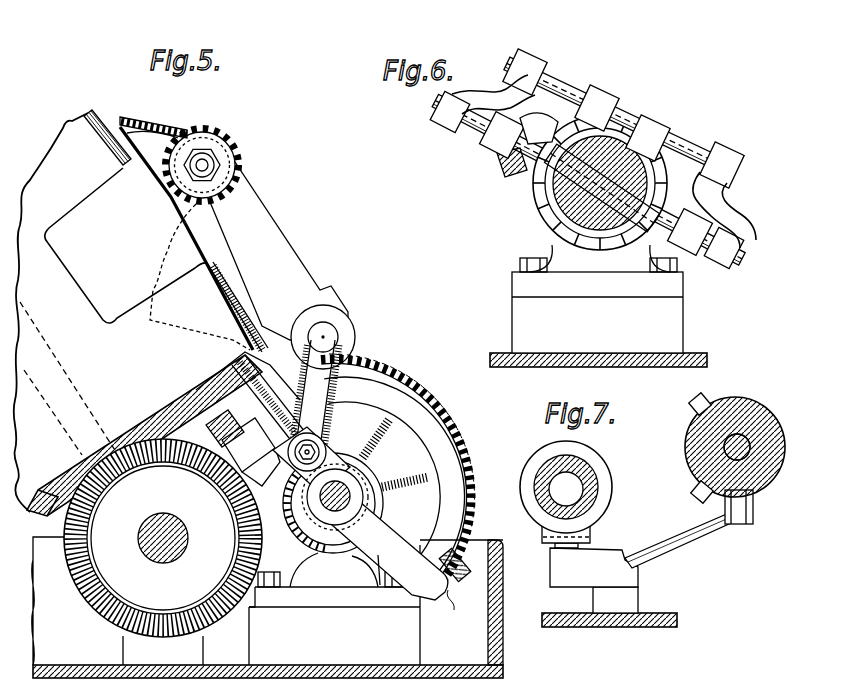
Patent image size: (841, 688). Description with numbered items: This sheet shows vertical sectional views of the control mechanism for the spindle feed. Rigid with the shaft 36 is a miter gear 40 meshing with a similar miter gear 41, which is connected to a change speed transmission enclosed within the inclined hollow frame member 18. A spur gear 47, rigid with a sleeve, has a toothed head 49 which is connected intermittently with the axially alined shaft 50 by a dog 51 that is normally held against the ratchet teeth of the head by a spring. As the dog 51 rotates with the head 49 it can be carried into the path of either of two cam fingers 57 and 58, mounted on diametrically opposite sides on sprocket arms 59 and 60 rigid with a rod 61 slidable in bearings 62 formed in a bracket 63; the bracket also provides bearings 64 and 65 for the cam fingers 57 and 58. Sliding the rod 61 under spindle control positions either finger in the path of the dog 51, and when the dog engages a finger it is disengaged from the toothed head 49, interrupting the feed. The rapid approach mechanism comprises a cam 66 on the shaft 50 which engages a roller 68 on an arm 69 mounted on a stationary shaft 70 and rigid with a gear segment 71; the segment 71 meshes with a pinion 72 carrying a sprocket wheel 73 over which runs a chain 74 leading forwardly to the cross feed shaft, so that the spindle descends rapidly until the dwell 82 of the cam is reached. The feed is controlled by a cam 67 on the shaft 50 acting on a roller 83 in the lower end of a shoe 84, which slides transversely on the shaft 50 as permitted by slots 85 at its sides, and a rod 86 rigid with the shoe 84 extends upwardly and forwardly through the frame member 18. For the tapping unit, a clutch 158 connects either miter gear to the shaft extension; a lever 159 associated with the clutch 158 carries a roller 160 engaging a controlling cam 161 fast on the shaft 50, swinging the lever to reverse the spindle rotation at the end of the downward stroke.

In FIG. 5, the inclined hollow frame member 18 is at (110, 311).
In FIG. 5, the shaft 36 is at (150, 518).
In FIG. 7, the shaft 36 is at (578, 472).
In FIG. 5, the miter gear 40 is at (97, 612).
In FIG. 5, the miter gear 41 is at (47, 490).
In FIG. 5, the spur gear 47 is at (455, 423).
In FIG. 5, the toothed head 49 is at (322, 560).
In FIG. 6, the toothed head 49 is at (648, 120).
In FIG. 5, the shaft 50 is at (300, 530).
In FIG. 6, the shaft 50 is at (601, 188).
In FIG. 7, the shaft 50 is at (722, 450).
In FIG. 5, the dog 51 is at (380, 585).
In FIG. 6, the dog 51 is at (548, 218).
In FIG. 5, the cam finger 57 is at (228, 472).
In FIG. 6, the cam finger 57 is at (530, 183).
In FIG. 6, the cam finger 58 is at (640, 262).
In FIG. 6, the sprocket arm 59 is at (505, 70).
In FIG. 6, the sprocket arm 60 is at (740, 210).
In FIG. 6, the rod 61 is at (572, 85).
In FIG. 6, the bearing 62 is at (606, 98).
In FIG. 6, the bracket 63 is at (546, 128).
In FIG. 6, the bearing 64 is at (482, 148).
In FIG. 6, the bearing 65 is at (704, 264).
In FIG. 5, the cam 66 is at (405, 420).
In FIG. 5, the cam 67 is at (283, 520).
In FIG. 5, the roller 68 is at (312, 430).
In FIG. 5, the arm 69 is at (360, 370).
In FIG. 5, the stationary shaft 70 is at (335, 328).
In FIG. 5, the gear segment 71 is at (298, 262).
In FIG. 5, the pinion 72 is at (245, 160).
In FIG. 5, the sprocket wheel 73 is at (196, 138).
In FIG. 5, the chain 74 is at (160, 122).
In FIG. 5, the dwell 82 is at (456, 590).
In FIG. 5, the roller 83 is at (350, 555).
In FIG. 5, the shoe 84 is at (250, 490).
In FIG. 5, the slot 85 is at (340, 468).
In FIG. 5, the rod 86 is at (240, 366).
In FIG. 7, the clutch 158 is at (612, 490).
In FIG. 7, the lever 159 is at (668, 565).
In FIG. 7, the roller 160 is at (757, 524).
In FIG. 7, the controlling cam 161 is at (740, 396).